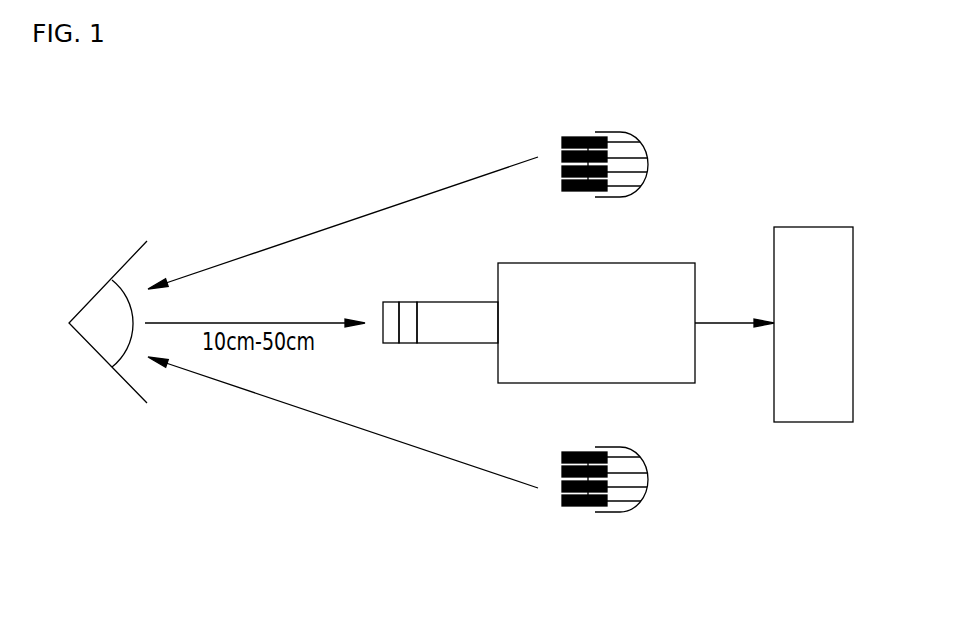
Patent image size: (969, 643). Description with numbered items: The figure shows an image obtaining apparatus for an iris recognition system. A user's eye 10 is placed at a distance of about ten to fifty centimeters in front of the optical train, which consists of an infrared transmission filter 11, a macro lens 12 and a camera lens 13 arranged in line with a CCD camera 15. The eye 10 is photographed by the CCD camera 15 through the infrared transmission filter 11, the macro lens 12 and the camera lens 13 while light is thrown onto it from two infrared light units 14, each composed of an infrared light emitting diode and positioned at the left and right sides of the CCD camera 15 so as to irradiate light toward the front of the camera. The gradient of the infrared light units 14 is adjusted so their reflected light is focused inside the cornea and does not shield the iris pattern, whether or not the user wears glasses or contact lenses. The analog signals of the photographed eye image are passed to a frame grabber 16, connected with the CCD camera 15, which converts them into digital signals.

The user's eye 10 is at (95, 352).
The infrared transmission filter 11 is at (390, 340).
The macro lens 12 is at (405, 307).
The camera lens 13 is at (438, 333).
The infrared light unit 14 is at (647, 150).
The CCD camera 15 is at (657, 385).
The frame grabber 16 is at (808, 227).